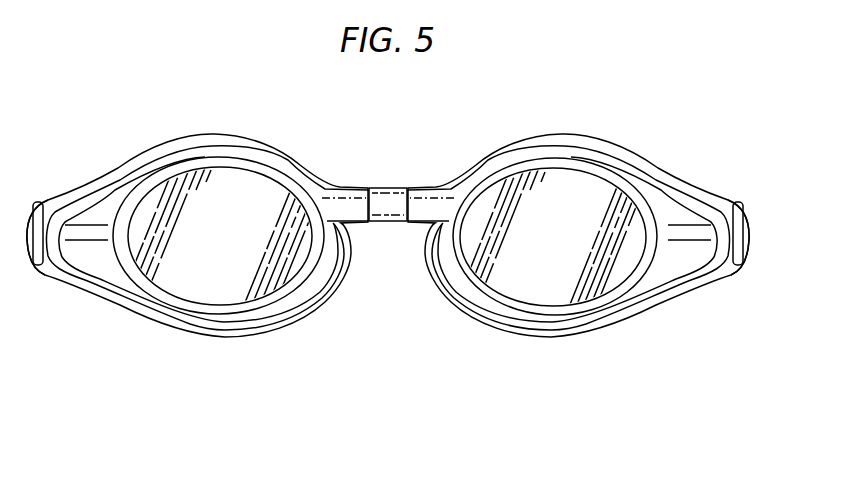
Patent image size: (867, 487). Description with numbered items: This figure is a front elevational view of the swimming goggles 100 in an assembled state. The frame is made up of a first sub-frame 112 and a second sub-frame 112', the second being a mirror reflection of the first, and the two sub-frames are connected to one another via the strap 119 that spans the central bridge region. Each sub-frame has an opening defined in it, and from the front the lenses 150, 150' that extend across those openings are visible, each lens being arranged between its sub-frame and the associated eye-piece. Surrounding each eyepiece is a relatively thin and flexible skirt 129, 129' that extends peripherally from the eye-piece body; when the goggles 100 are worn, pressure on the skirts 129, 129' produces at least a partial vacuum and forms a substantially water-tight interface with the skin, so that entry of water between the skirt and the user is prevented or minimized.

The swimming goggles 100 is at (412, 93).
The first sub-frame 112 is at (67, 200).
The second sub-frame 112' is at (708, 200).
The strap 119 is at (388, 210).
The flexible skirt 129 is at (197, 215).
The second flexible skirt 129' is at (578, 215).
The second lens 150 is at (224, 282).
The second lens of second sub-frame 150' is at (553, 282).